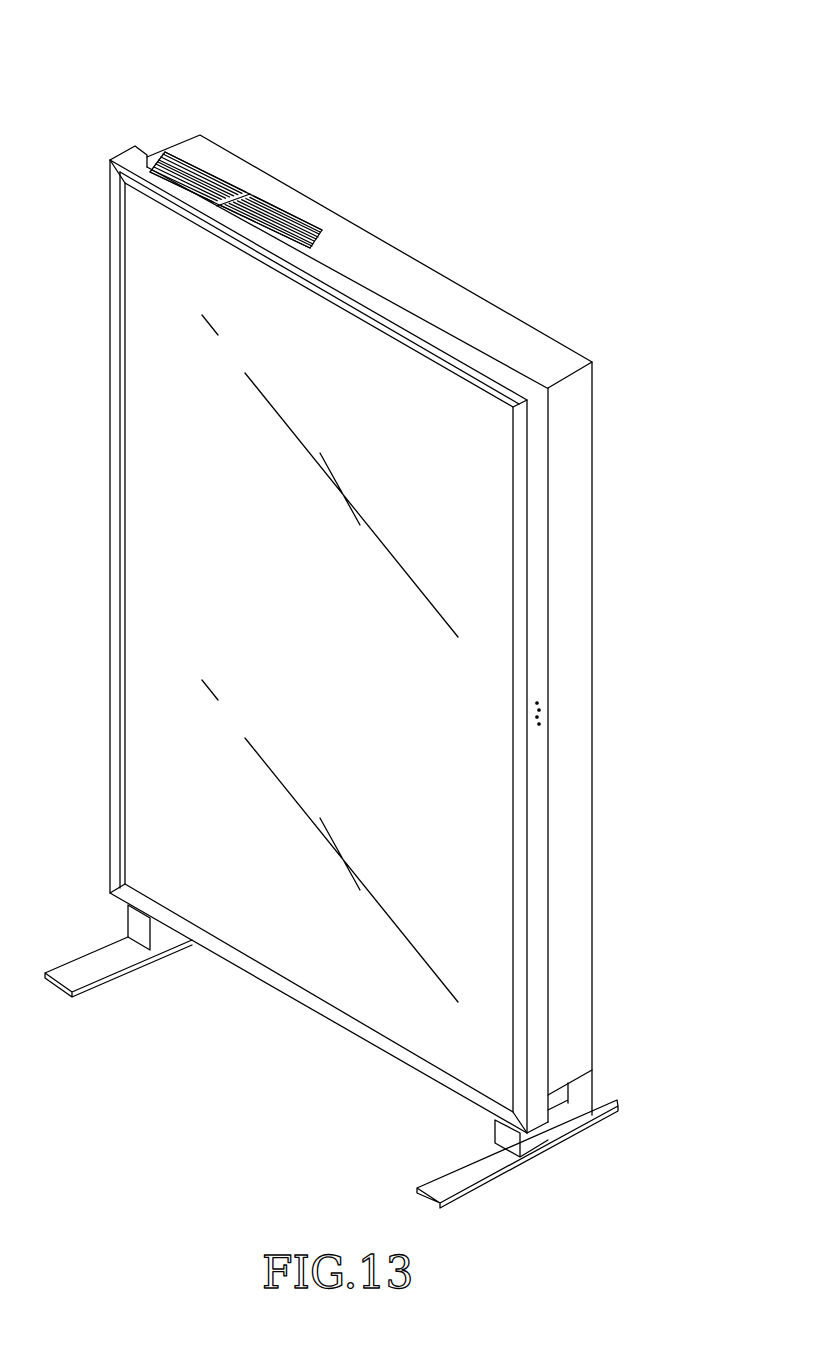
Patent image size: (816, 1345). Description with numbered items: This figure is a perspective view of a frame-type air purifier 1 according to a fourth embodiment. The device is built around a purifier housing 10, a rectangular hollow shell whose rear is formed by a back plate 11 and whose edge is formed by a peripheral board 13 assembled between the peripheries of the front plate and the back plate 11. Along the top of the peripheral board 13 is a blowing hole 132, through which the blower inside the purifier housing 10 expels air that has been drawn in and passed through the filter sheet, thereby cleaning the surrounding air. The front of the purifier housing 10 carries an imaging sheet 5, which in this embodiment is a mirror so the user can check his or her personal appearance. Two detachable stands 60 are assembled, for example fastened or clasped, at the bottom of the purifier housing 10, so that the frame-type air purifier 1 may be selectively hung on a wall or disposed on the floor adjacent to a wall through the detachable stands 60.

The frame-type air purifier 1 is at (705, 86).
The purifier housing 10 is at (160, 128).
The imaging sheet 5 is at (455, 400).
The back plate 11 is at (598, 392).
The peripheral board 13 is at (388, 264).
The blowing hole 132 is at (228, 182).
The detachable stand 60 is at (130, 918).